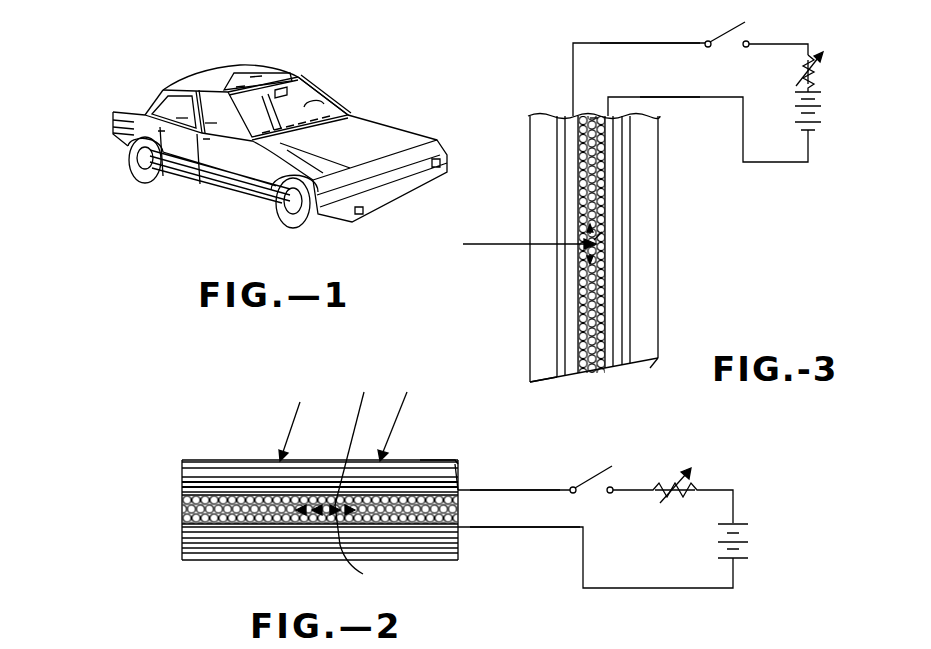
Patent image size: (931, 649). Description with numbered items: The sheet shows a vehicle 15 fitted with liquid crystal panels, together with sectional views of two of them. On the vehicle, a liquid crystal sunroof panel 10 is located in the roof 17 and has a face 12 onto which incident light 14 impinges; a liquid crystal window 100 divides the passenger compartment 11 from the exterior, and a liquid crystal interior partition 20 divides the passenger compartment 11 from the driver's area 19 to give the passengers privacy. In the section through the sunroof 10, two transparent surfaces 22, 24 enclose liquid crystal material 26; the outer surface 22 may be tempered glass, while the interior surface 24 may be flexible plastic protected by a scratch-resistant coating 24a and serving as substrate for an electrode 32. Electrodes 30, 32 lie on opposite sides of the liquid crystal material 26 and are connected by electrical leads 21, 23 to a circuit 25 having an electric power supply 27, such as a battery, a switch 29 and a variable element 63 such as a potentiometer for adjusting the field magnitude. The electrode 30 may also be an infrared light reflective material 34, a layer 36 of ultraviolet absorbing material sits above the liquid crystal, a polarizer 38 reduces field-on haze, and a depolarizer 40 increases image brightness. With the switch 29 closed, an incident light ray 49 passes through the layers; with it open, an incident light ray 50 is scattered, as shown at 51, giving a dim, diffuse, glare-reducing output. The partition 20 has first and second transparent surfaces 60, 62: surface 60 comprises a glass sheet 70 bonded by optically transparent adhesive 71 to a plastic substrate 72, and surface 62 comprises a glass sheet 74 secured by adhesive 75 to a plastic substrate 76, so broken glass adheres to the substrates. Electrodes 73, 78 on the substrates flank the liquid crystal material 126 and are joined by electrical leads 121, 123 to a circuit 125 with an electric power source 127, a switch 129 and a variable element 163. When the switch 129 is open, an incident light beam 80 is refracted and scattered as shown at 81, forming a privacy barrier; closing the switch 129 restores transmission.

In FIG. 1, the liquid crystal sunroof panel 10 is at (262, 75).
In FIG. 2, the liquid crystal sunroof panel 10 is at (190, 402).
In FIG. 1, the passenger compartment 11 is at (162, 95).
In FIG. 1, the face 12 is at (283, 72).
In FIG. 2, the face 12 is at (425, 460).
In FIG. 1, the incident light 14 is at (240, 82).
In FIG. 2, the incident light 14 is at (407, 392).
In FIG. 1, the vehicle 15 is at (392, 124).
In FIG. 1, the roof 17 is at (190, 77).
In FIG. 1, the driver's area 19 is at (316, 90).
In FIG. 1, the liquid crystal interior partition 20 is at (211, 125).
In FIG. 3, the liquid crystal interior partition 20 is at (680, 239).
In FIG. 1, the liquid crystal window 100 is at (181, 124).
In FIG. 2, the electrical lead 21 is at (500, 490).
In FIG. 2, the transparent surface 22 is at (182, 462).
In FIG. 2, the electrical lead 23 is at (497, 527).
In FIG. 2, the transparent surface 24 is at (182, 538).
In FIG. 2, the scratch-resistant coating 24a is at (182, 558).
In FIG. 2, the circuit 25 is at (724, 466).
In FIG. 2, the liquid crystal material 26 is at (182, 507).
In FIG. 2, the electric power supply 27 is at (748, 545).
In FIG. 2, the switch 29 is at (600, 478).
In FIG. 2, the electrode 30 is at (182, 487).
In FIG. 2, the electrode 32 is at (182, 527).
In FIG. 2, the infrared light reflective material 34 is at (458, 480).
In FIG. 2, the ultraviolet light absorbing layer 36 is at (182, 478).
In FIG. 2, the polarizer 38 is at (182, 548).
In FIG. 2, the depolarizer 40 is at (182, 470).
In FIG. 2, the light ray 49 is at (293, 412).
In FIG. 2, the incident light ray 50 is at (362, 400).
In FIG. 2, the scattered light 51 is at (358, 550).
In FIG. 2, the variable element 63 is at (672, 480).
In FIG. 3, the first transparent surface 60 is at (650, 322).
In FIG. 3, the second transparent surface 62 is at (530, 286).
In FIG. 3, the glass sheet 70 is at (650, 368).
In FIG. 3, the optically transparent adhesive 71 is at (640, 362).
In FIG. 3, the plastic substrate 72 is at (623, 365).
In FIG. 3, the electrode 73 is at (613, 367).
In FIG. 3, the glass sheet 74 is at (533, 382).
In FIG. 3, the adhesive 75 is at (553, 378).
In FIG. 3, the plastic substrate 76 is at (567, 376).
In FIG. 3, the electrode 78 is at (591, 371).
In FIG. 3, the light beam 80 is at (510, 243).
In FIG. 3, the scattered light 81 is at (600, 237).
In FIG. 3, the electrical lead 121 is at (657, 43).
In FIG. 3, the electrical lead 123 is at (672, 97).
In FIG. 3, the circuit 125 is at (800, 22).
In FIG. 3, the liquid crystal material 126 is at (594, 116).
In FIG. 3, the electric power source 127 is at (824, 134).
In FIG. 3, the switch 129 is at (724, 40).
In FIG. 3, the variable element 163 is at (800, 80).